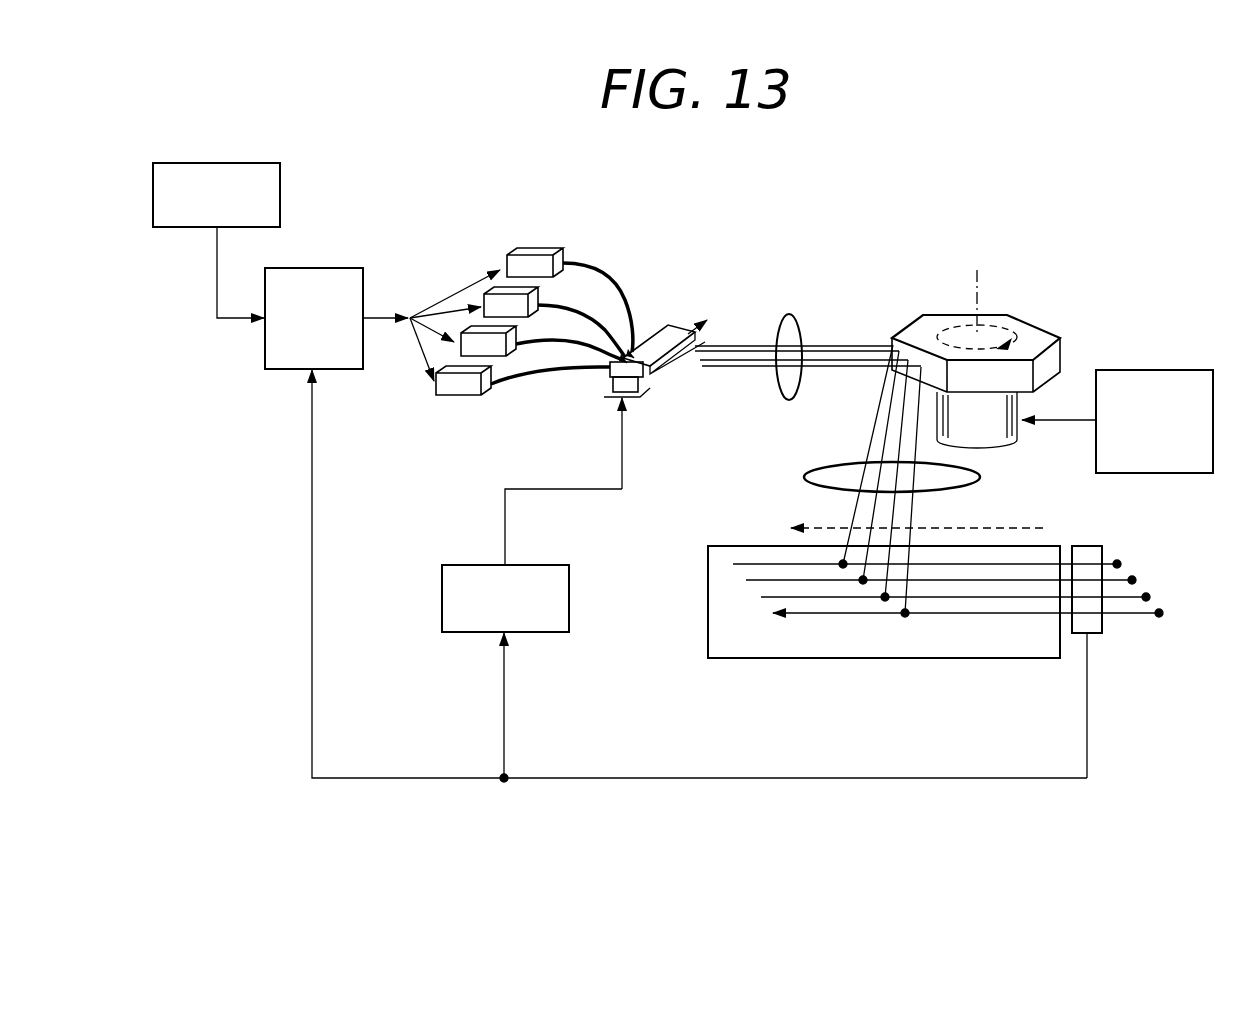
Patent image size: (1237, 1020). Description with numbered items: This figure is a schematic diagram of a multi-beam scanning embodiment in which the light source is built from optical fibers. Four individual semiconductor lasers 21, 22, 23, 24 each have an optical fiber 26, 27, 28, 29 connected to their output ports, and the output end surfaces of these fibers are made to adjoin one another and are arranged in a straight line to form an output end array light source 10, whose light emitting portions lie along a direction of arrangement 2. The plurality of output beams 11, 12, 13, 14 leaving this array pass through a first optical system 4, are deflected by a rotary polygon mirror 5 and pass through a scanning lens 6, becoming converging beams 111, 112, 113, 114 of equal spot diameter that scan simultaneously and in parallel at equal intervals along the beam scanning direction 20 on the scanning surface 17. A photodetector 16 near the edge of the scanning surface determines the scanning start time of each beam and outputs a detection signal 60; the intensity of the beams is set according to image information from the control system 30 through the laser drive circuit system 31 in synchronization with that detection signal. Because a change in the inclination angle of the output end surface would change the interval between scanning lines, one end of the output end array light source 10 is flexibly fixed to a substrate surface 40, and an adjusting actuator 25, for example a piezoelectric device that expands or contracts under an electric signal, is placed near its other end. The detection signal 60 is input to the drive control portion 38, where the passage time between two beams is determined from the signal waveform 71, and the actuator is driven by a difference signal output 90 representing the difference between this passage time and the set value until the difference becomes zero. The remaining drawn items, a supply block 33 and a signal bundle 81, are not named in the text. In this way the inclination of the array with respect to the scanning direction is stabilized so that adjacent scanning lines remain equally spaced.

The control system 30 is at (283, 192).
The laser drive circuit system 31 is at (332, 268).
The semiconductor laser 21 is at (534, 250).
The semiconductor laser 22 is at (486, 291).
The semiconductor laser 23 is at (464, 328).
The semiconductor laser 24 is at (456, 397).
The optical fiber 26 is at (585, 265).
The optical fiber 27 is at (601, 317).
The optical fiber 28 is at (573, 345).
The optical fiber 29 is at (531, 370).
The output end array light source 10 is at (669, 325).
The direction of arrangement of the light emitting portions 2 is at (699, 320).
The output beam 11 is at (739, 346).
The output beam 12 is at (712, 352).
The output beam 13 is at (737, 361).
The output beam 14 is at (762, 367).
The substrate surface 40 is at (645, 390).
The adjusting actuator 25 is at (633, 401).
The first optical system 4 is at (803, 323).
The rotary polygon mirror 5 is at (1032, 322).
The drive power supply 33 is at (1170, 370).
The scanning lens 6 is at (982, 476).
The beam scanning direction 20 is at (1022, 528).
The photodetector 16 is at (1088, 546).
The detection signal line 81 is at (1135, 530).
The converging beam 111 is at (1117, 564).
The converging beam 112 is at (1132, 580).
The converging beam 113 is at (1146, 597).
The converging beam 114 is at (1159, 613).
The scanning surface 17 is at (997, 660).
The detection signal 60 is at (790, 778).
The signal waveform 71 is at (504, 702).
The drive control portion 38 is at (538, 565).
The difference signal output 90 is at (505, 521).